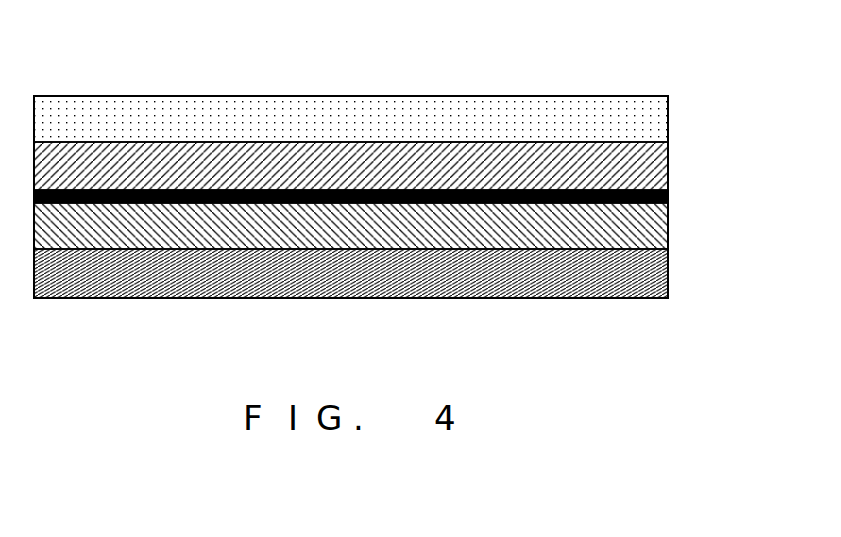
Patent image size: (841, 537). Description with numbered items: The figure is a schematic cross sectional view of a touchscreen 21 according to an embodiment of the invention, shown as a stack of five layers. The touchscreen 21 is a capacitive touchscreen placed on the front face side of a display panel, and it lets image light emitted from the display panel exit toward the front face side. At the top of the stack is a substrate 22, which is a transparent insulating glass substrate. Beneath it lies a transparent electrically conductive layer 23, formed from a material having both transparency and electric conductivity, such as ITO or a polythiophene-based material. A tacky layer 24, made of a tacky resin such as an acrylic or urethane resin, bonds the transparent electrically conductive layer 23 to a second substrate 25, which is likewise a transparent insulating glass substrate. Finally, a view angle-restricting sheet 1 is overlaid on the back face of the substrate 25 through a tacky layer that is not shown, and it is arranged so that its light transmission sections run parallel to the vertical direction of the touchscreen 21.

The touchscreen 21 is at (673, 48).
The substrate 22 is at (640, 117).
The transparent electrically conductive layer 23 is at (650, 160).
The tacky layer 24 is at (657, 188).
The substrate 25 is at (642, 222).
The view angle-restricting sheet 1 is at (653, 263).